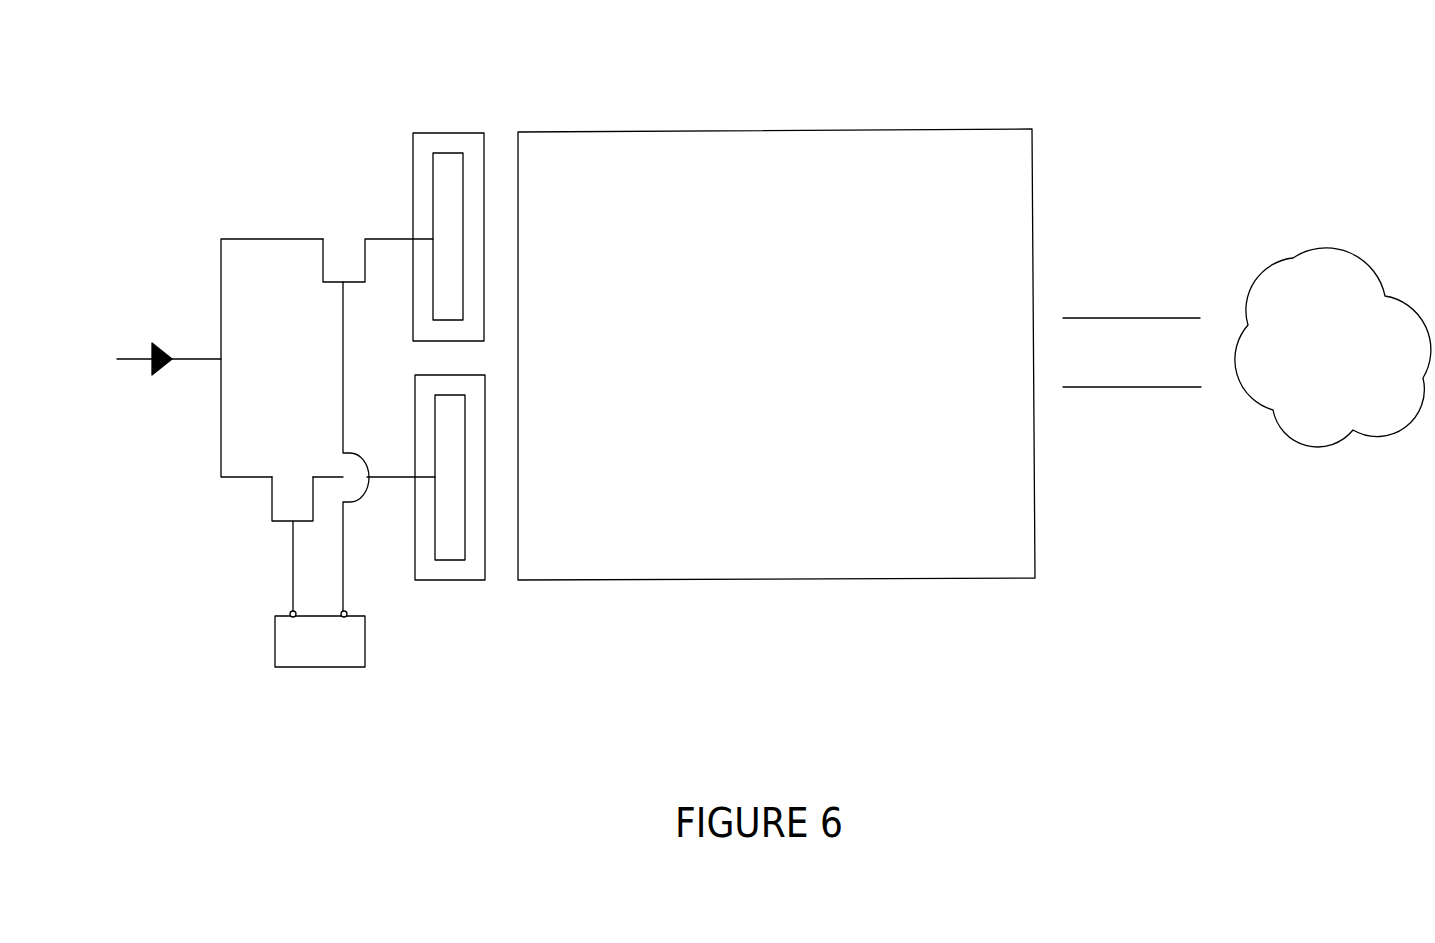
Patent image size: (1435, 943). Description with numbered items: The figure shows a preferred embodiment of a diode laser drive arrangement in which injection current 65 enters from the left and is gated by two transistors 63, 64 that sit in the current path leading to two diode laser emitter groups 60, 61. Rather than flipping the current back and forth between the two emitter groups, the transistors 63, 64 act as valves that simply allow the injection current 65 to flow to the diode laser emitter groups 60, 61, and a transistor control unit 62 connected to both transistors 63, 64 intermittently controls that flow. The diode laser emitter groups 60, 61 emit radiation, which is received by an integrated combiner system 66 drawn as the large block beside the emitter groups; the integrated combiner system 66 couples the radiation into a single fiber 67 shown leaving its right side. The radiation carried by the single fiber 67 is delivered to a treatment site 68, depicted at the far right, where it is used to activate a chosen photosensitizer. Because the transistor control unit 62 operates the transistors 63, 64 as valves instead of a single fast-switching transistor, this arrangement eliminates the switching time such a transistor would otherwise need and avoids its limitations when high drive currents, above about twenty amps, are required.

The diode laser emitter group 60 is at (448, 168).
The diode laser emitter group 61 is at (450, 550).
The transistor control unit 62 is at (335, 657).
The transistor 63 is at (348, 252).
The transistor 64 is at (293, 487).
The injection current 65 is at (190, 357).
The integrated combiner system 66 is at (652, 548).
The single fiber 67 is at (1169, 372).
The treatment site 68 is at (1322, 423).